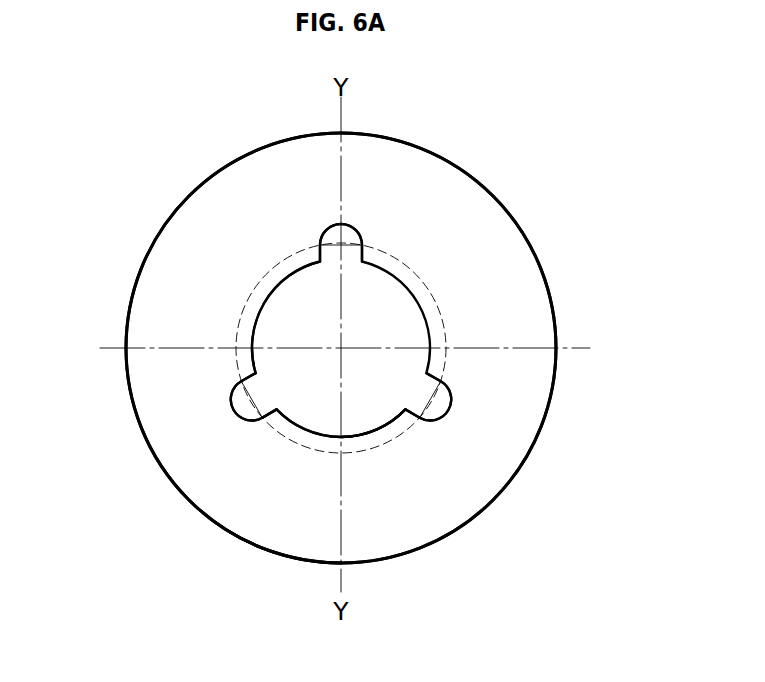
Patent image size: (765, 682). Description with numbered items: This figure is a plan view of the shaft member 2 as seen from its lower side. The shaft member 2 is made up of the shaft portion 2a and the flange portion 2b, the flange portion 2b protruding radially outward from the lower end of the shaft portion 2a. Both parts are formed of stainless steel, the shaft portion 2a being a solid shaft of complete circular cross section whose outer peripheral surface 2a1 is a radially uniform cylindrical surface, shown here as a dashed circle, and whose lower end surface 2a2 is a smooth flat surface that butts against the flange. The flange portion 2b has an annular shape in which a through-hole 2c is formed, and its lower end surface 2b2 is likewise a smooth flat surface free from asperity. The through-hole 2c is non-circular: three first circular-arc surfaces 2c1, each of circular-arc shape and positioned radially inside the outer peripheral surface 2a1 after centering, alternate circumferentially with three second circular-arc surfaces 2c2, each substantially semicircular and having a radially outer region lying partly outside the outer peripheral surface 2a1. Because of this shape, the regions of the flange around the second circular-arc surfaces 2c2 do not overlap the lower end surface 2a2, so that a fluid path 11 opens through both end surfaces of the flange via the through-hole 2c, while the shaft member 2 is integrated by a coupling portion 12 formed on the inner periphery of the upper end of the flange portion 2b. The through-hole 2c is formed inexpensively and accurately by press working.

The shaft member 2 is at (520, 164).
The shaft portion 2a is at (408, 335).
The outer peripheral surface 2a1 is at (430, 287).
The lower end surface 2a2 is at (373, 407).
The flange portion 2b is at (205, 218).
The end surface 2b2 is at (232, 508).
The through-hole 2c is at (287, 378).
The first circular-arc surface 2c1 is at (261, 308).
The second circular-arc surface 2c2 is at (250, 415).
The fluid path 11 is at (333, 228).
The coupling portion 12 is at (293, 294).